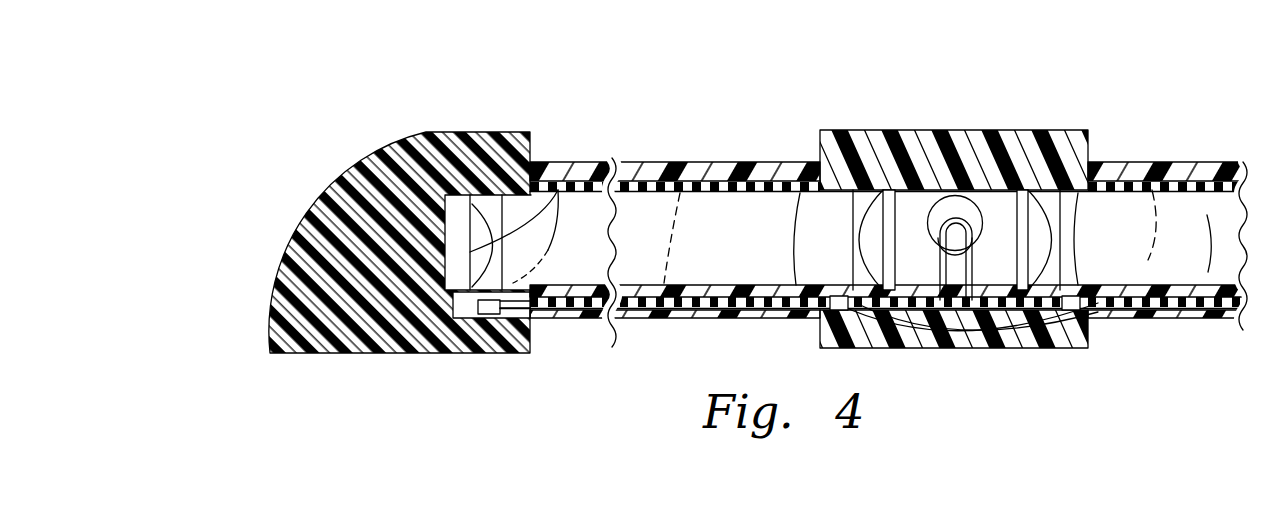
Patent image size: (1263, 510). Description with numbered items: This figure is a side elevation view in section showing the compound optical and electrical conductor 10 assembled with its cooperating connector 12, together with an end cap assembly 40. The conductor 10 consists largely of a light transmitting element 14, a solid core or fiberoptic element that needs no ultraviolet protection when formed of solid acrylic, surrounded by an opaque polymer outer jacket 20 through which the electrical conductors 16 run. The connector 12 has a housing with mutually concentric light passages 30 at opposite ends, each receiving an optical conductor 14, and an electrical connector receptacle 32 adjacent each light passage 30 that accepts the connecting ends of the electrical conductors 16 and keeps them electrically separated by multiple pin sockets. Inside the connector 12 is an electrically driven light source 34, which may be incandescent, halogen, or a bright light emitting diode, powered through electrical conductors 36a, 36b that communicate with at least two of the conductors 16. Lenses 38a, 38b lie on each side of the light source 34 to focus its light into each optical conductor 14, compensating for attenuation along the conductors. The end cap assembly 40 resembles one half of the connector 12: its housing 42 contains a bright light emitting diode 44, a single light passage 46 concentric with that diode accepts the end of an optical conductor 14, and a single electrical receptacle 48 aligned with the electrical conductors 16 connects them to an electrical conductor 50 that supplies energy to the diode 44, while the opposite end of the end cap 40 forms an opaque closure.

The compound optical and electrical conductor 10 is at (875, 218).
The connector 12 is at (954, 209).
The light transmitting element 14 is at (591, 261).
The electrical conductors 16 is at (673, 324).
The outer jacket 20 is at (640, 162).
The light passages 30 is at (851, 205).
The electrical connector receptacles 32 is at (818, 322).
The light source 34 is at (983, 204).
The electrical conductor 36a is at (918, 340).
The electrical conductor 36b is at (990, 335).
The lens 38a is at (859, 242).
The lens 38b is at (1055, 244).
The end cap assembly 40 is at (428, 223).
The housing 42 is at (336, 192).
The bright light emitting diode 44 is at (511, 228).
The light passage 46 is at (560, 193).
The electrical receptacle 48 is at (525, 322).
The electrical conductor 50 is at (488, 318).